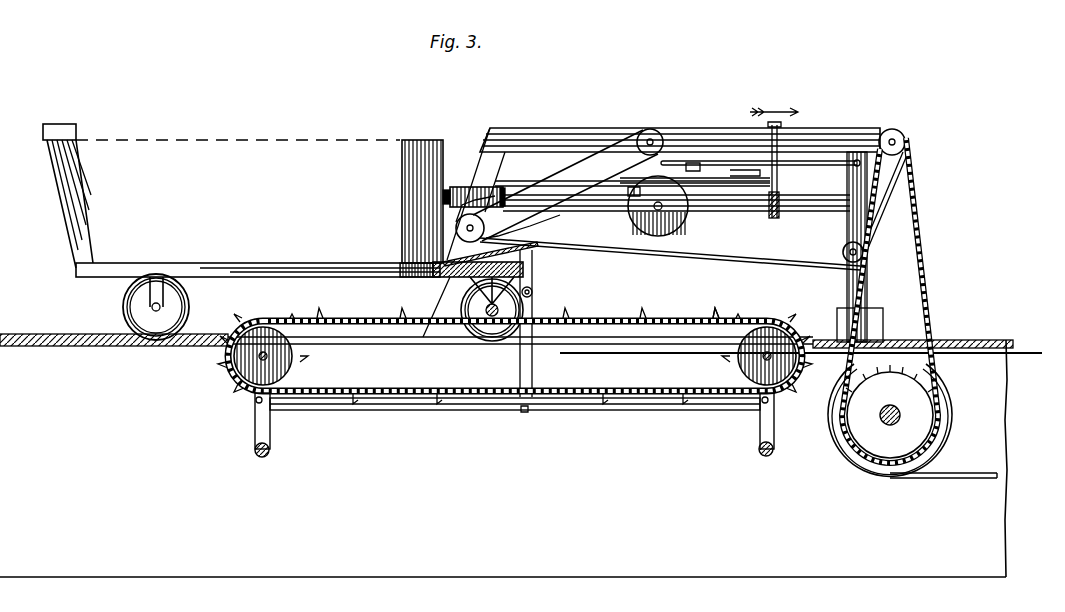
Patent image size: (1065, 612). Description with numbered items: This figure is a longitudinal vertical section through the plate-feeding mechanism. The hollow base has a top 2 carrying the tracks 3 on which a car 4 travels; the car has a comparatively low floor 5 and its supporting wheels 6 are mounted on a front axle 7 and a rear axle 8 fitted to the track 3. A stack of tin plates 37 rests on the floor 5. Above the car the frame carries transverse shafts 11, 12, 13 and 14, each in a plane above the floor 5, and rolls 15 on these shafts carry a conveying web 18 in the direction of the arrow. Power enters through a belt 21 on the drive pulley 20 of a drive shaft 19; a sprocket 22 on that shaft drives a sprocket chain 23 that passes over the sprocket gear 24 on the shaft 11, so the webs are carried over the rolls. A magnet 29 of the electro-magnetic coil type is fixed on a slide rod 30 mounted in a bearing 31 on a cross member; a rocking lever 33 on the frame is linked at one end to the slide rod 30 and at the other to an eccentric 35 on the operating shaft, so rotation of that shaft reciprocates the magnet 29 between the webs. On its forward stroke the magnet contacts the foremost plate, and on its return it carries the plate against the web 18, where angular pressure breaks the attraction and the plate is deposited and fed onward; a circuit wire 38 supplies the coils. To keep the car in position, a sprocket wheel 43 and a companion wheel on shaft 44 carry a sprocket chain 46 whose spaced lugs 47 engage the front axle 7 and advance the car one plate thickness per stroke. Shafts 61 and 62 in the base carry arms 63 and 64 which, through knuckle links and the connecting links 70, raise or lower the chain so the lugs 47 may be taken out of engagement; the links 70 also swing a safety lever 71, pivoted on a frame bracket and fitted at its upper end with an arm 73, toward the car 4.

The top 2 is at (42, 334).
The tracks 3 is at (208, 333).
The car 4 is at (70, 226).
The floor 5 is at (258, 264).
The supporting wheels 6 is at (152, 333).
The front axle 7 is at (492, 322).
The rear axle 8 is at (150, 305).
The shaft 11 is at (910, 150).
The shaft 12 is at (612, 148).
The shaft 13 is at (487, 233).
The shaft 14 is at (845, 268).
The rolls 15 is at (650, 129).
The conveying web 18 is at (690, 259).
The drive shaft 19 is at (900, 413).
The drive pulley 20 is at (878, 470).
The belt 21 is at (954, 479).
The sprocket 22 is at (862, 430).
The sprocket chain 23 is at (928, 305).
The sprocket gear 24 is at (905, 138).
The magnet 29 is at (467, 186).
The slide rod 30 is at (553, 178).
The bearing 31 is at (633, 198).
The rocking lever 33 is at (790, 180).
The eccentric 35 is at (670, 232).
The tin plates 37 is at (418, 141).
The circuit wire 38 is at (815, 165).
The sprocket wheel 43 is at (240, 366).
The shaft 44 is at (785, 368).
The sprocket chain 46 is at (680, 318).
The lugs 47 is at (636, 314).
The shaft 61 is at (763, 458).
The shaft 62 is at (264, 457).
The arm 63 is at (761, 425).
The arm 64 is at (258, 428).
The links 70 is at (472, 408).
The safety lever 71 is at (533, 373).
The arm 73 is at (440, 279).